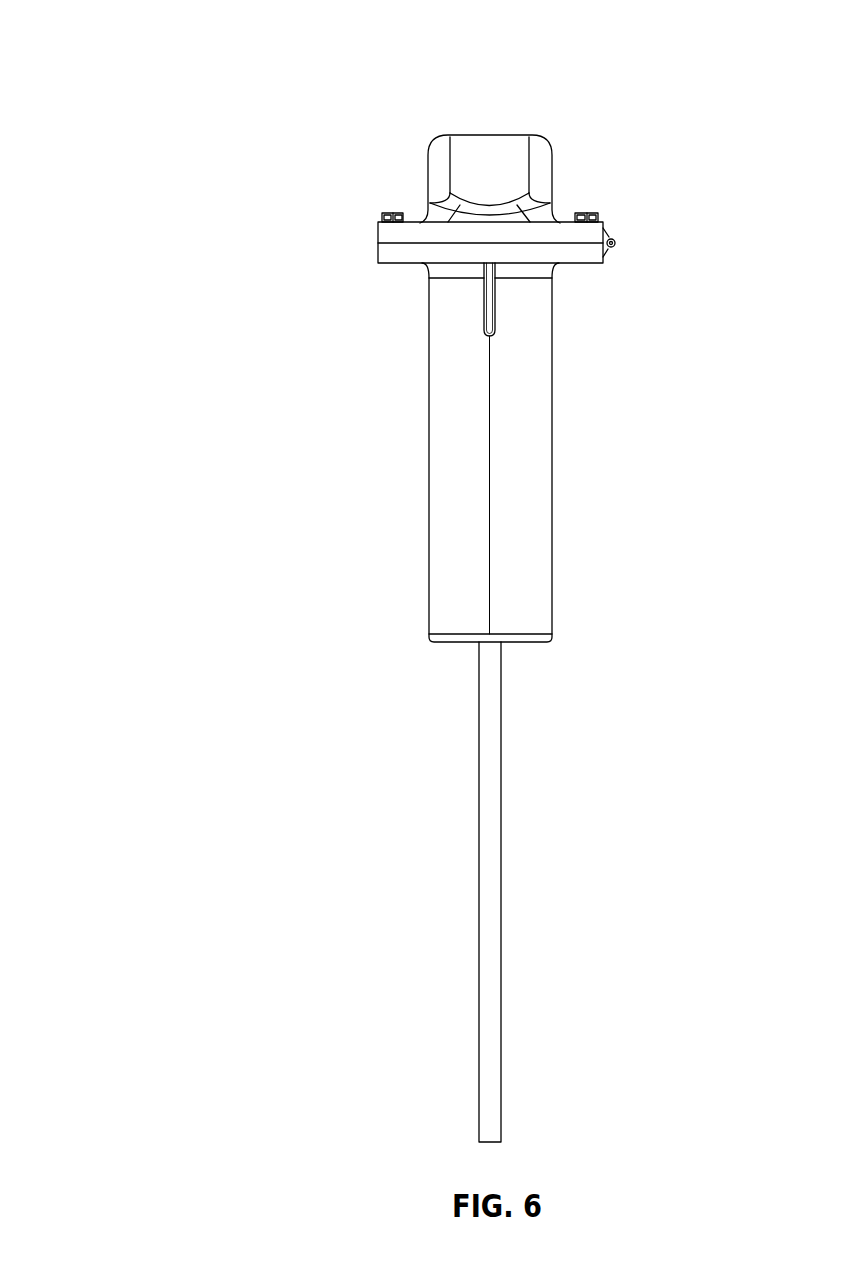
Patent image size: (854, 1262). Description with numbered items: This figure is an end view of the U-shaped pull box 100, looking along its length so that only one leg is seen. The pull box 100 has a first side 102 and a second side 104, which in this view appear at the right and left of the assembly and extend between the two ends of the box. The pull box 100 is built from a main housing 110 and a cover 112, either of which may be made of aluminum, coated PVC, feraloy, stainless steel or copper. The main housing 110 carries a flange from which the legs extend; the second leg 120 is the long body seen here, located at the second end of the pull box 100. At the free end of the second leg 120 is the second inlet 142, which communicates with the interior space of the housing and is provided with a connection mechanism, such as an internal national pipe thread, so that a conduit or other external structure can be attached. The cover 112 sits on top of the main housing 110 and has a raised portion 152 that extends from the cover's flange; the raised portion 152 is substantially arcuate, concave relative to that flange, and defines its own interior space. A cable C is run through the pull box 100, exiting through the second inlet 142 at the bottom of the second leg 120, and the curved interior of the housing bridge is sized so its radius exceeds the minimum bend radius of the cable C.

The pull box 100 is at (140, 84).
The first side 102 is at (660, 242).
The second side 104 is at (308, 249).
The main housing 110 is at (552, 568).
The cover 112 is at (552, 165).
The second leg 120 is at (542, 502).
The second inlet 142 is at (588, 233).
The raised portion 152 is at (497, 147).
The cable C is at (493, 1080).